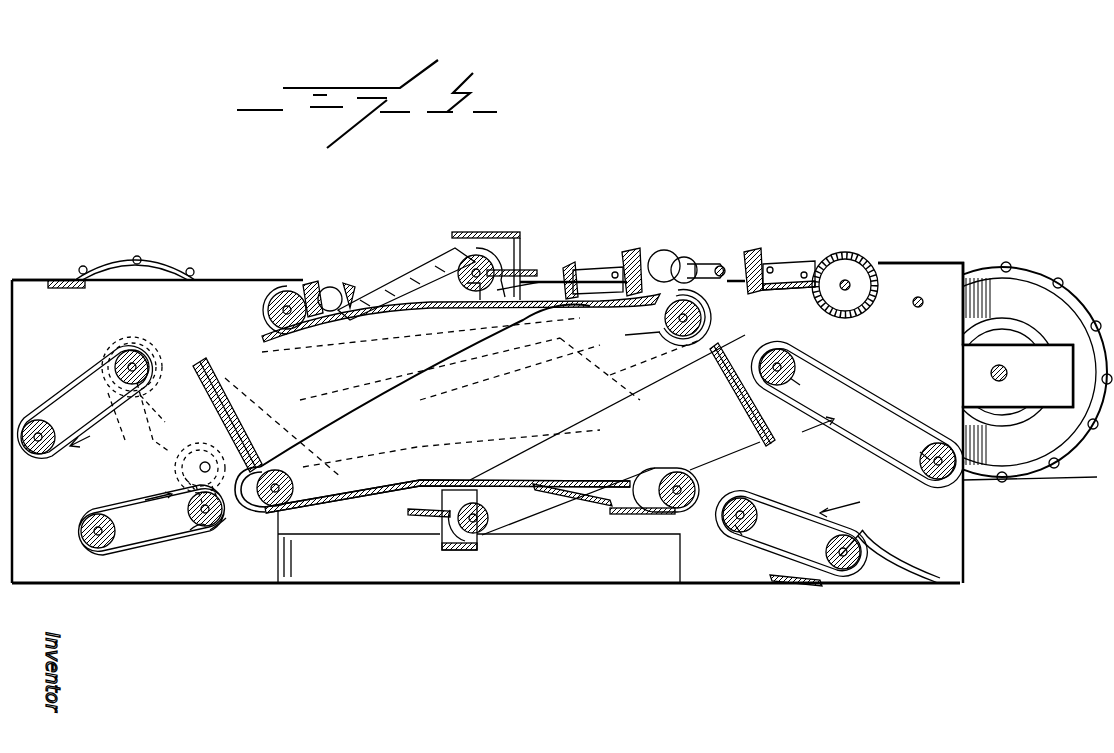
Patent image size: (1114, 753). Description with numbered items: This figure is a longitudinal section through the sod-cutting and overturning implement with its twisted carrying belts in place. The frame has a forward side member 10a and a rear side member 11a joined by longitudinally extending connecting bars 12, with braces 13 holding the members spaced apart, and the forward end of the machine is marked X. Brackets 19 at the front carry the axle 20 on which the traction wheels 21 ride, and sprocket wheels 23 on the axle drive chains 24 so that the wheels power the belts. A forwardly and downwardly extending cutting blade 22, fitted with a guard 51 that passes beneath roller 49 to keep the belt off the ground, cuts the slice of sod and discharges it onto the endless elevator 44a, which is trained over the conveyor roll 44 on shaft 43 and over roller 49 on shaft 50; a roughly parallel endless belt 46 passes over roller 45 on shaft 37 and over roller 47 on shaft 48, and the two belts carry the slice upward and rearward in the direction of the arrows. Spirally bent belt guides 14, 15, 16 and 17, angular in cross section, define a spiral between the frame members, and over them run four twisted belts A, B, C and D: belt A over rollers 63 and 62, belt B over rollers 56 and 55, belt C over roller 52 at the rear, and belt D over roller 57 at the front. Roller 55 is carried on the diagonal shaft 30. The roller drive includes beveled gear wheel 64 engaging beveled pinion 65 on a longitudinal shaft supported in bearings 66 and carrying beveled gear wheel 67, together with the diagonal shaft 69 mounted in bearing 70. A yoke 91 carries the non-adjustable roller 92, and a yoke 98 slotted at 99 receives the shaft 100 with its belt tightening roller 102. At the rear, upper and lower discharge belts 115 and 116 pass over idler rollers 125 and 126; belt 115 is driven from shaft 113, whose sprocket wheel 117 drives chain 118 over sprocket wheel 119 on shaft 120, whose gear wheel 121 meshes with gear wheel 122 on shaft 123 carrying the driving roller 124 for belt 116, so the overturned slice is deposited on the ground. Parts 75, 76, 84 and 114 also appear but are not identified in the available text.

The forward side member 10a is at (947, 263).
The rear side member 11a is at (28, 283).
The connecting bars 12 is at (560, 588).
The braces 13 is at (60, 290).
The belt guide 14 is at (437, 490).
The belt guide 15 is at (587, 502).
The belt guide 16 is at (388, 303).
The belt guide 17 is at (562, 290).
The brackets 19 is at (1060, 343).
The axle 20 is at (1004, 378).
The traction wheels 21 is at (1002, 275).
The cutting blade 22 is at (924, 570).
The sprocket wheels 23 is at (1020, 415).
The chain 24 is at (1000, 438).
The shaft 30 is at (632, 333).
The shaft 37 is at (804, 382).
The shaft 43 is at (750, 522).
The conveyor roll 44 is at (738, 526).
The endless elevator 44a is at (775, 500).
The roller 45 is at (786, 352).
The endless belt 46 is at (870, 403).
The roller 47 is at (926, 456).
The shaft 48 is at (940, 472).
The roller 49 is at (826, 549).
The shaft 50 is at (848, 542).
The guard 51 is at (816, 584).
The roller 52 is at (222, 356).
The roller 55 is at (706, 318).
The roller 56 is at (268, 508).
The roller 57 is at (712, 416).
The roller 62 is at (690, 504).
The roller 63 is at (268, 303).
The beveled gear wheel 64 is at (880, 262).
The beveled pinion 65 is at (838, 258).
The bearings 66 is at (797, 262).
The beveled gear wheel 67 is at (752, 252).
The shaft 69 is at (710, 264).
The bearing 70 is at (697, 257).
The disc 75 is at (664, 260).
The block 76 is at (604, 292).
The plate 84 is at (633, 250).
The yoke 91 is at (443, 550).
The roller 92 is at (477, 537).
The yoke 98 is at (478, 232).
The slots 99 is at (516, 238).
The shaft 100 is at (470, 258).
The belt tightening roller 102 is at (497, 290).
The shaft 113 is at (126, 352).
The arched cover 114 is at (137, 258).
The upper belt 115 is at (68, 402).
The lower belt 116 is at (128, 510).
The sprocket wheel 117 is at (144, 394).
The sprocket chain 118 is at (142, 425).
The sprocket wheel 119 is at (186, 445).
The shaft 120 is at (199, 467).
The gear wheel 121 is at (184, 479).
The gear wheel 122 is at (188, 512).
The shaft 123 is at (196, 531).
The roller 124 is at (226, 530).
The idler roller 125 is at (80, 532).
The idler roller 126 is at (32, 452).
The belt A is at (340, 290).
The belt B is at (287, 508).
The belt C is at (258, 342).
The belt D is at (767, 445).
The forward end of the machine X is at (1015, 534).